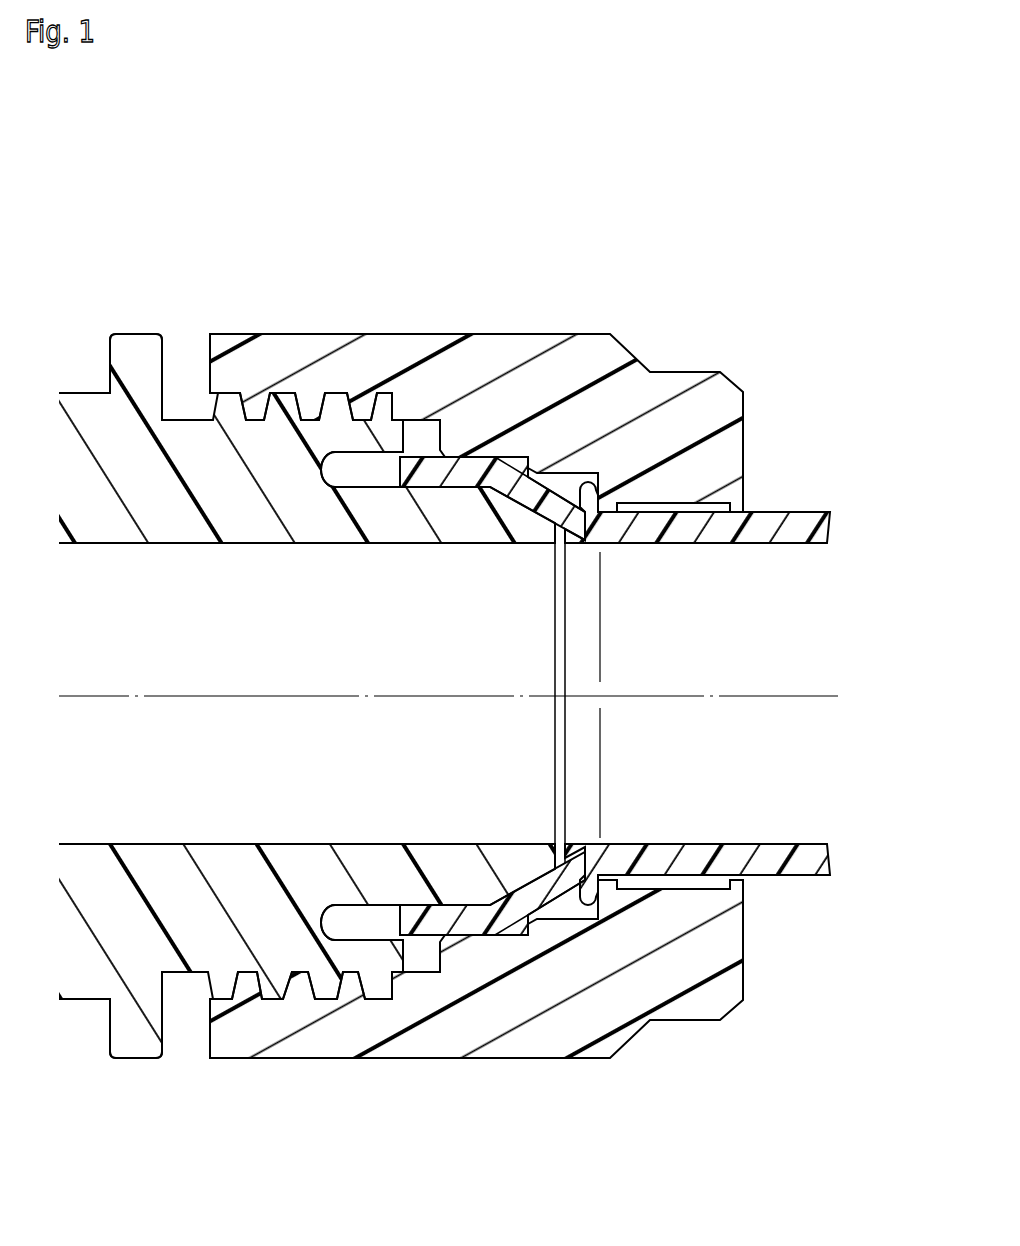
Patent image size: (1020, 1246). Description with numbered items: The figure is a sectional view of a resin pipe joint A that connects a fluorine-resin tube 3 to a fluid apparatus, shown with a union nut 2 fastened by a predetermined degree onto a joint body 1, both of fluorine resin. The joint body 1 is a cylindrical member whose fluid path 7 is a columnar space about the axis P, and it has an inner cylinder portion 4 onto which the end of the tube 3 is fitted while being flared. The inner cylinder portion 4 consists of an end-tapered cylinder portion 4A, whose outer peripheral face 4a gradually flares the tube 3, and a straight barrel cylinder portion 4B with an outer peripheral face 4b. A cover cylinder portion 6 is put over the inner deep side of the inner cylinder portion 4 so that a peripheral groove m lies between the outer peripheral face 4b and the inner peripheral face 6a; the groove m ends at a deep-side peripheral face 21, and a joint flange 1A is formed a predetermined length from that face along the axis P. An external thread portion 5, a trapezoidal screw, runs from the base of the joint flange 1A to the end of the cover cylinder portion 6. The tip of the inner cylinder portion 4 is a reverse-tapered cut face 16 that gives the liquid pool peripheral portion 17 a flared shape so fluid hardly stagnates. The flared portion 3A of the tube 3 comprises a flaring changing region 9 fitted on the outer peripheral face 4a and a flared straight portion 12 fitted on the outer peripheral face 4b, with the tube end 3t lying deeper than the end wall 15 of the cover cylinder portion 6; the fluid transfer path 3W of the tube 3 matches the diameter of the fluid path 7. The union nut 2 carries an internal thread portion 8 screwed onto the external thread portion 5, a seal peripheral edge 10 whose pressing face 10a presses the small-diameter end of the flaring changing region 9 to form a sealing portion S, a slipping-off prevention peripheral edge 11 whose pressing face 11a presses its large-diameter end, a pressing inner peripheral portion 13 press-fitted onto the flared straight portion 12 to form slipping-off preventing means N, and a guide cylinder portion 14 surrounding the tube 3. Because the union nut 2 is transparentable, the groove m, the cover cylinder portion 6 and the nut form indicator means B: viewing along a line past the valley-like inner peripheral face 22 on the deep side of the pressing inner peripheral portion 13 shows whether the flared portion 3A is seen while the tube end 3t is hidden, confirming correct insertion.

The joint body 1 is at (92, 392).
The joint flange 1A is at (141, 343).
The union nut 2 is at (687, 367).
The tube 3 is at (805, 512).
The flared portion 3A is at (500, 905).
The tube end 3t is at (405, 905).
The fluid transfer path 3W is at (770, 644).
The inner cylinder portion 4 is at (462, 545).
The end-tapered cylinder portion 4A is at (505, 540).
The straight barrel cylinder portion 4B is at (410, 540).
The outer peripheral face of end-tapered cylinder portion 4a is at (582, 488).
The outer peripheral face of straight barrel cylinder portion 4b is at (348, 500).
The external thread portion 5 is at (322, 998).
The cover cylinder portion 6 is at (376, 440).
The inner peripheral face of cover cylinder portion 6a is at (355, 450).
The fluid path 7 is at (205, 632).
The internal thread portion 8 is at (343, 470).
The flaring changing region 9 is at (660, 910).
The seal peripheral edge 10 is at (578, 550).
The pressing face of seal peripheral edge 10a is at (600, 455).
The slipping-off prevention peripheral edge 11 is at (540, 545).
The pressing face of slipping-off prevention peripheral edge 11a is at (593, 500).
The flared straight portion 12 is at (457, 920).
The pressing inner peripheral portion 13 is at (530, 470).
The guide cylinder portion 14 is at (701, 900).
The end wall 15 is at (405, 450).
The cut face 16 is at (573, 847).
The liquid pool peripheral portion 17 is at (579, 845).
The deep-side peripheral face 21 is at (337, 977).
The valley-like inner peripheral face 22 is at (424, 954).
The resin pipe joint A is at (769, 324).
The indicator means B is at (430, 436).
The slipping-off preventing means N is at (512, 446).
The peripheral groove m is at (352, 455).
The axis P is at (148, 692).
The sealing portion S is at (583, 873).